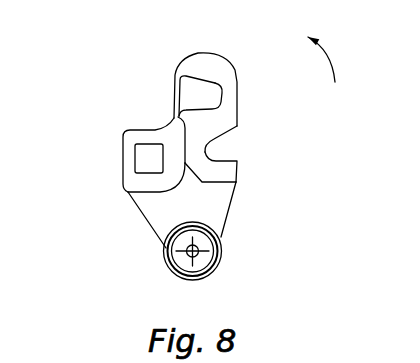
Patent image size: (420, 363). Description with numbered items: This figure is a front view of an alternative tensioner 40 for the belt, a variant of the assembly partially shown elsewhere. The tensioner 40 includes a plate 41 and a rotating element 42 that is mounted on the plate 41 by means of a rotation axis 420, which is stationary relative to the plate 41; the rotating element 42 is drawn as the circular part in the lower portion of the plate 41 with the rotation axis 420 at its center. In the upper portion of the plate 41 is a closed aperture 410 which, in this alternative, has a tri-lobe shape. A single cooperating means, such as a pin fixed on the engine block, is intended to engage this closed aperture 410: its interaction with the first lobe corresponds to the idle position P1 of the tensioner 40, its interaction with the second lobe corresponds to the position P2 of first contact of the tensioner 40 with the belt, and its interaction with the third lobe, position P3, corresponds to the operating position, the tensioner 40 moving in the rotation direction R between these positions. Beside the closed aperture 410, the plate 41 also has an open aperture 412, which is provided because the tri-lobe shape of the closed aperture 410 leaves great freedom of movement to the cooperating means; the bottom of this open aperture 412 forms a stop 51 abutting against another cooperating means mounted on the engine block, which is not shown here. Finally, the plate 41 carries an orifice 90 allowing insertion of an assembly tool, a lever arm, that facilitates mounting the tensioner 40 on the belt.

The tensioner 40 is at (130, 217).
The plate 41 is at (198, 196).
The rotating element 42 is at (217, 273).
The rotation axis 420 is at (188, 256).
The closed aperture 410 is at (204, 90).
The open aperture 412 is at (237, 140).
The stop 51 is at (216, 157).
The orifice 90 is at (148, 162).
The idle position P1 is at (142, 131).
The position of first contact with the belt P2 is at (184, 79).
The third position P3 is at (216, 98).
The rotation direction R is at (327, 57).